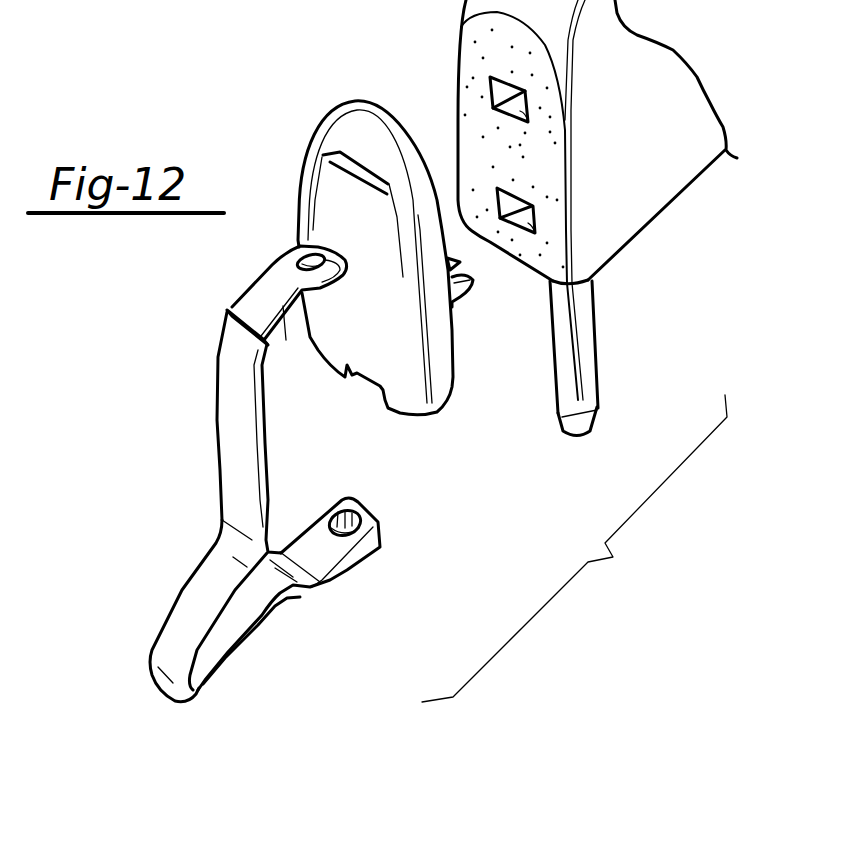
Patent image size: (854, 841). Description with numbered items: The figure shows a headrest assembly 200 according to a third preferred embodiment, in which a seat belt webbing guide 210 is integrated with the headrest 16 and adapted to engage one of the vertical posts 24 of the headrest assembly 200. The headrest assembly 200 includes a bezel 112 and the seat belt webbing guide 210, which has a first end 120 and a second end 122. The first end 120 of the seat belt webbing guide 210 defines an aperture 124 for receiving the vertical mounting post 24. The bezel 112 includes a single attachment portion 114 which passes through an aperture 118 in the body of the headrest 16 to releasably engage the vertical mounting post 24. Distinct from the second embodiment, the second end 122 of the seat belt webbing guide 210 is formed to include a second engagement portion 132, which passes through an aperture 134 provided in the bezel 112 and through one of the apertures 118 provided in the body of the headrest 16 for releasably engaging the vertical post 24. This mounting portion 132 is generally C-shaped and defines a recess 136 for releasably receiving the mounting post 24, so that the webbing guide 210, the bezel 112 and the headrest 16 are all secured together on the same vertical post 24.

The headrest 16 is at (601, 218).
The vertical post 24 is at (598, 332).
The aperture 118 is at (528, 122).
The headrest assembly 200 is at (383, 225).
The bezel 112 is at (294, 169).
The aperture 134 is at (350, 153).
The attachment portion 114 is at (457, 305).
The second engagement portion 132 is at (286, 340).
The seat belt webbing guide 210 is at (290, 445).
The recess 136 is at (325, 247).
The second end 122 is at (230, 309).
The first end 120 is at (311, 600).
The aperture 124 is at (380, 523).